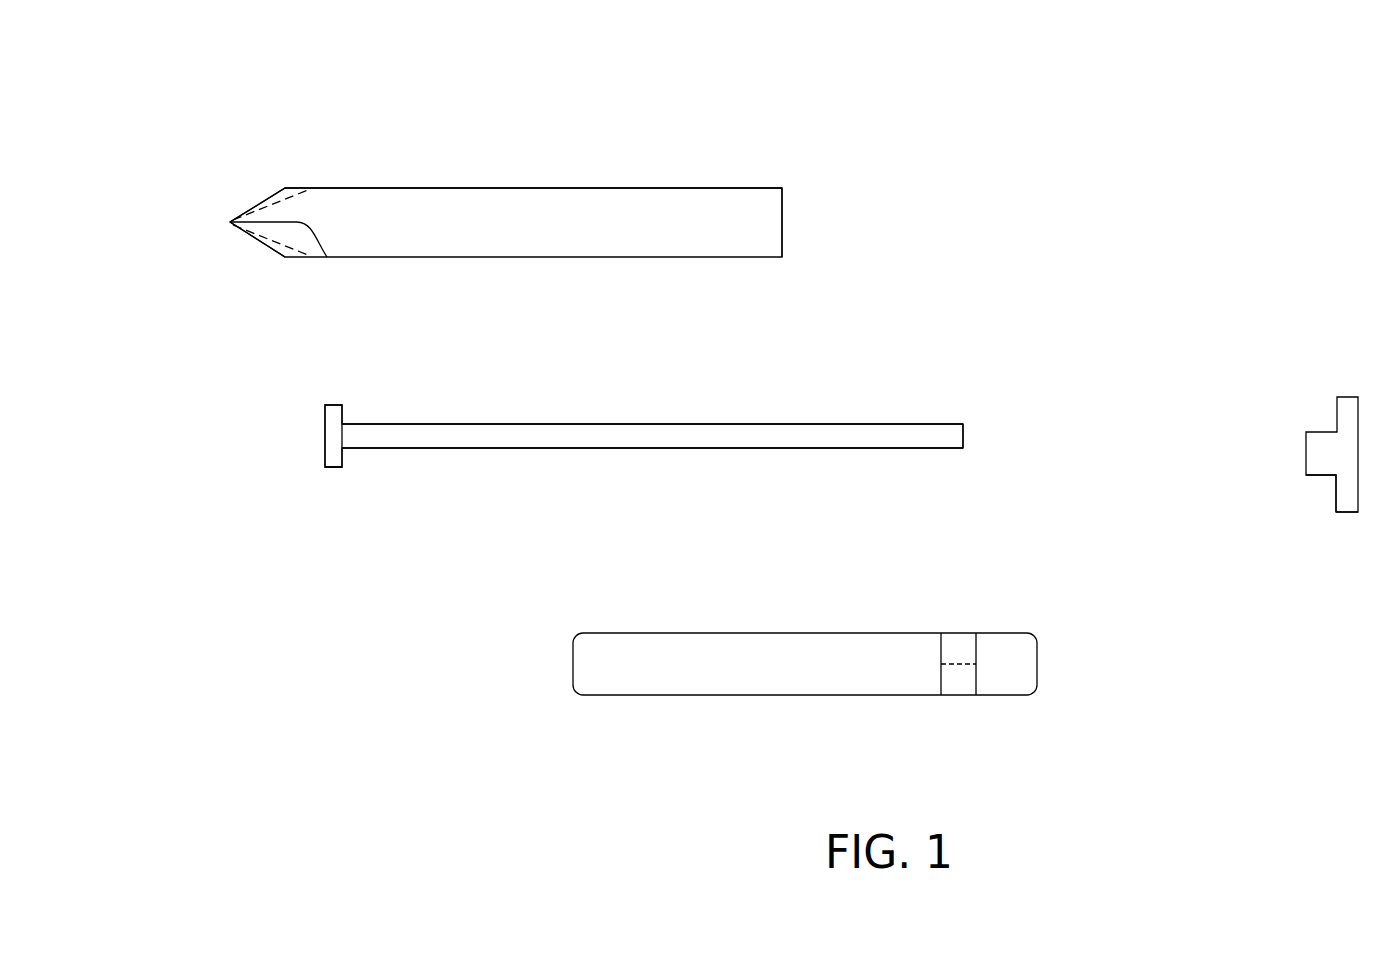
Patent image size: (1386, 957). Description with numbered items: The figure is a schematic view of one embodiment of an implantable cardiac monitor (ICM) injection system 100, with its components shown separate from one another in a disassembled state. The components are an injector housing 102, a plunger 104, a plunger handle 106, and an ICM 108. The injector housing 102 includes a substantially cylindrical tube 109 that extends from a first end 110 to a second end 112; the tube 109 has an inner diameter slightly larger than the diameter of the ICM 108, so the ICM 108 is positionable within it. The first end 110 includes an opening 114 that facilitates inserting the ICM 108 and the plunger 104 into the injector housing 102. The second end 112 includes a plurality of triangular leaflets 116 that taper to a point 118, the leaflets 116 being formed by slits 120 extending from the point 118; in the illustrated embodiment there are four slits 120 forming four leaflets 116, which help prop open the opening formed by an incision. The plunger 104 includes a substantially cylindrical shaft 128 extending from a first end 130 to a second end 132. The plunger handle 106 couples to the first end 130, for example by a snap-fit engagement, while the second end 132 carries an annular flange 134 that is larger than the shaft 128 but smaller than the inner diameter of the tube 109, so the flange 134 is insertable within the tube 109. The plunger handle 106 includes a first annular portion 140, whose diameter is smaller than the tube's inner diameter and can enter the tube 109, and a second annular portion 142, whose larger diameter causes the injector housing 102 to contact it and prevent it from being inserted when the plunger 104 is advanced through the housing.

The implantable cardiac monitor injection system 100 is at (1082, 133).
The injector housing 102 is at (757, 189).
The plunger 104 is at (643, 424).
The plunger handle 106 is at (1345, 405).
The ICM 108 is at (873, 633).
The tube 109 is at (498, 212).
The first end 110 is at (782, 197).
The second end 112 is at (252, 211).
The opening 114 is at (793, 228).
The triangular leaflets 116 is at (277, 196).
The point 118 is at (230, 222).
The slits 120 is at (327, 257).
The shaft 128 is at (497, 440).
The first end 130 is at (965, 433).
The second end 132 is at (325, 432).
The annular flange 134 is at (336, 467).
The first annular portion 140 is at (1318, 460).
The second annular portion 142 is at (1343, 505).